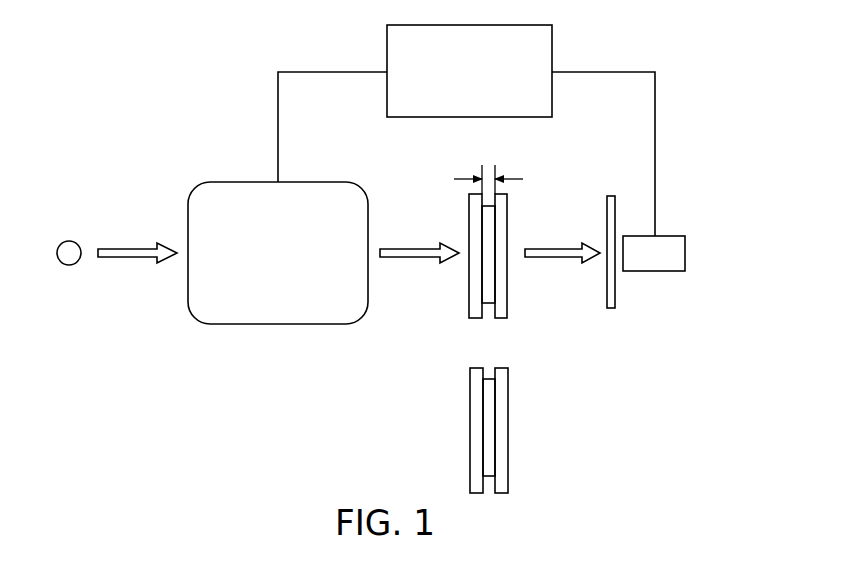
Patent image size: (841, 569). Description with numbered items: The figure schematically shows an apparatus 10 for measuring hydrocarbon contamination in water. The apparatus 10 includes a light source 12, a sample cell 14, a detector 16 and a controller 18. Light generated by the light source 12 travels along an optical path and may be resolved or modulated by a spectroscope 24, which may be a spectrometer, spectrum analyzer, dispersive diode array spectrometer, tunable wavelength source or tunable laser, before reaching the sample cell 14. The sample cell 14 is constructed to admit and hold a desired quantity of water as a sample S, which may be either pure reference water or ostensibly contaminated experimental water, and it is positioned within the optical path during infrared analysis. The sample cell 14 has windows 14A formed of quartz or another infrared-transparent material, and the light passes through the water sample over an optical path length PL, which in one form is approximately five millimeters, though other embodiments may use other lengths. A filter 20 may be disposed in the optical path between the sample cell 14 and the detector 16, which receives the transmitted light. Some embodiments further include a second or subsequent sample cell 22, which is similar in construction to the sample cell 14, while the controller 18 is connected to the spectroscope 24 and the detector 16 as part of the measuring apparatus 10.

The apparatus 10 is at (127, 87).
The light source 12 is at (70, 241).
The sample cell 14 is at (488, 244).
The quartz windows 14A is at (469, 200).
The detector 16 is at (685, 243).
The controller 18 is at (552, 32).
The filter 20 is at (615, 298).
The second sample cell 22 is at (500, 505).
The spectroscope 24 is at (188, 201).
The optical path length PL is at (489, 170).
The sample S is at (489, 304).